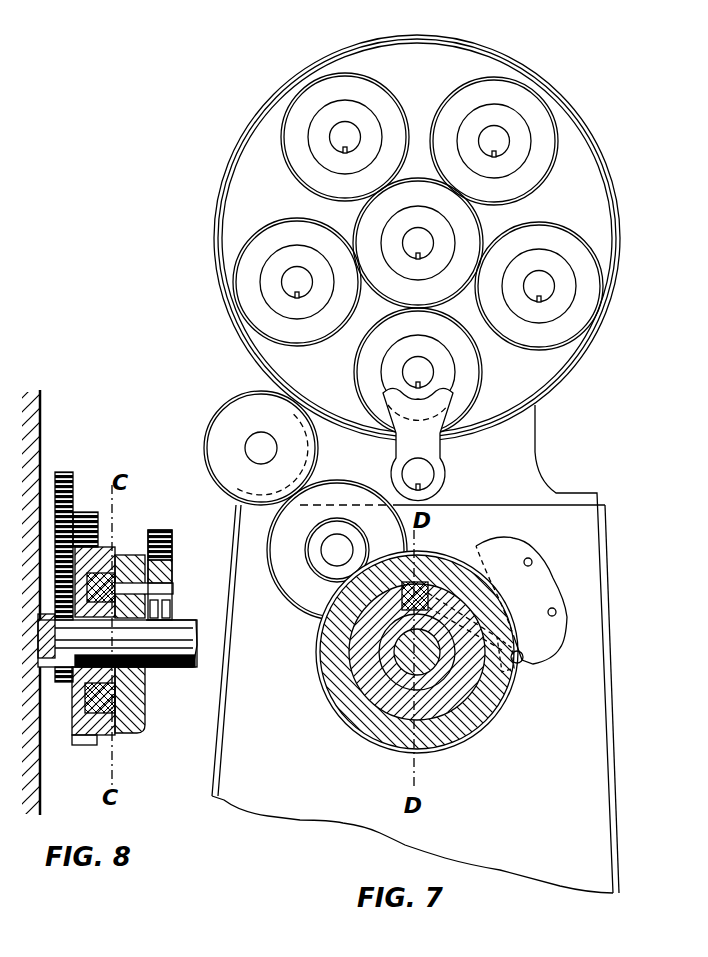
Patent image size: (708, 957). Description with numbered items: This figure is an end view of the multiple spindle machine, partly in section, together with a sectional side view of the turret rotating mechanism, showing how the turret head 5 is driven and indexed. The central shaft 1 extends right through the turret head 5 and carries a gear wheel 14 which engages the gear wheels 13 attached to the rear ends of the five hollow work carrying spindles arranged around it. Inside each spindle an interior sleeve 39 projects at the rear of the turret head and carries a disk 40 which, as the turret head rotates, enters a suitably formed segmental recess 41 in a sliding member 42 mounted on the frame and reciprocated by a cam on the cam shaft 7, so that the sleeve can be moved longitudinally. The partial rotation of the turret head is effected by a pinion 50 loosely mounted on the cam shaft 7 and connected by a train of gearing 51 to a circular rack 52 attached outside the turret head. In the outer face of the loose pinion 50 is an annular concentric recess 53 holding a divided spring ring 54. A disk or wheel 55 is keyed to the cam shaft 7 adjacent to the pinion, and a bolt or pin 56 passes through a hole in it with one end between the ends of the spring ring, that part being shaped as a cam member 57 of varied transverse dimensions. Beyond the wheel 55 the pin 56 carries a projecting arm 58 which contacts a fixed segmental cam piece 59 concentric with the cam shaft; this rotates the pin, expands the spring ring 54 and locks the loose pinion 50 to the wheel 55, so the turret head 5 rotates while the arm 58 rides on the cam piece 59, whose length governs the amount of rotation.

In FIG. 7, the central shaft 1 is at (418, 244).
In FIG. 7, the turret head 5 is at (417, 238).
In FIG. 7, the cam shaft 7 is at (422, 654).
In FIG. 8, the cam shaft 7 is at (177, 672).
In FIG. 7, the gear wheel 13 is at (442, 227).
In FIG. 7, the gear wheel on central shaft 14 is at (357, 223).
In FIG. 7, the interior sleeve 39 is at (348, 128).
In FIG. 7, the disk 40 is at (520, 141).
In FIG. 7, the segmental recess 41 is at (449, 406).
In FIG. 7, the sliding member 42 is at (418, 444).
In FIG. 7, the pinion 50 is at (375, 690).
In FIG. 8, the pinion 50 is at (87, 745).
In FIG. 7, the train of gearing 51 is at (305, 505).
In FIG. 8, the train of gearing 51 is at (68, 470).
In FIG. 7, the circular rack 52 is at (607, 171).
In FIG. 7, the annular concentric recess 53 is at (383, 722).
In FIG. 8, the annular concentric recess 53 is at (84, 706).
In FIG. 7, the divided spring ring 54 is at (452, 722).
In FIG. 8, the divided spring ring 54 is at (103, 713).
In FIG. 8, the disk or wheel 55 is at (146, 713).
In FIG. 8, the bolt or pin 56 is at (176, 592).
In FIG. 7, the cam member 57 is at (416, 582).
In FIG. 8, the cam member 57 is at (107, 577).
In FIG. 7, the projecting arm 58 is at (512, 674).
In FIG. 8, the projecting arm 58 is at (172, 610).
In FIG. 7, the segmental cam piece 59 is at (537, 551).
In FIG. 8, the segmental cam piece 59 is at (172, 537).